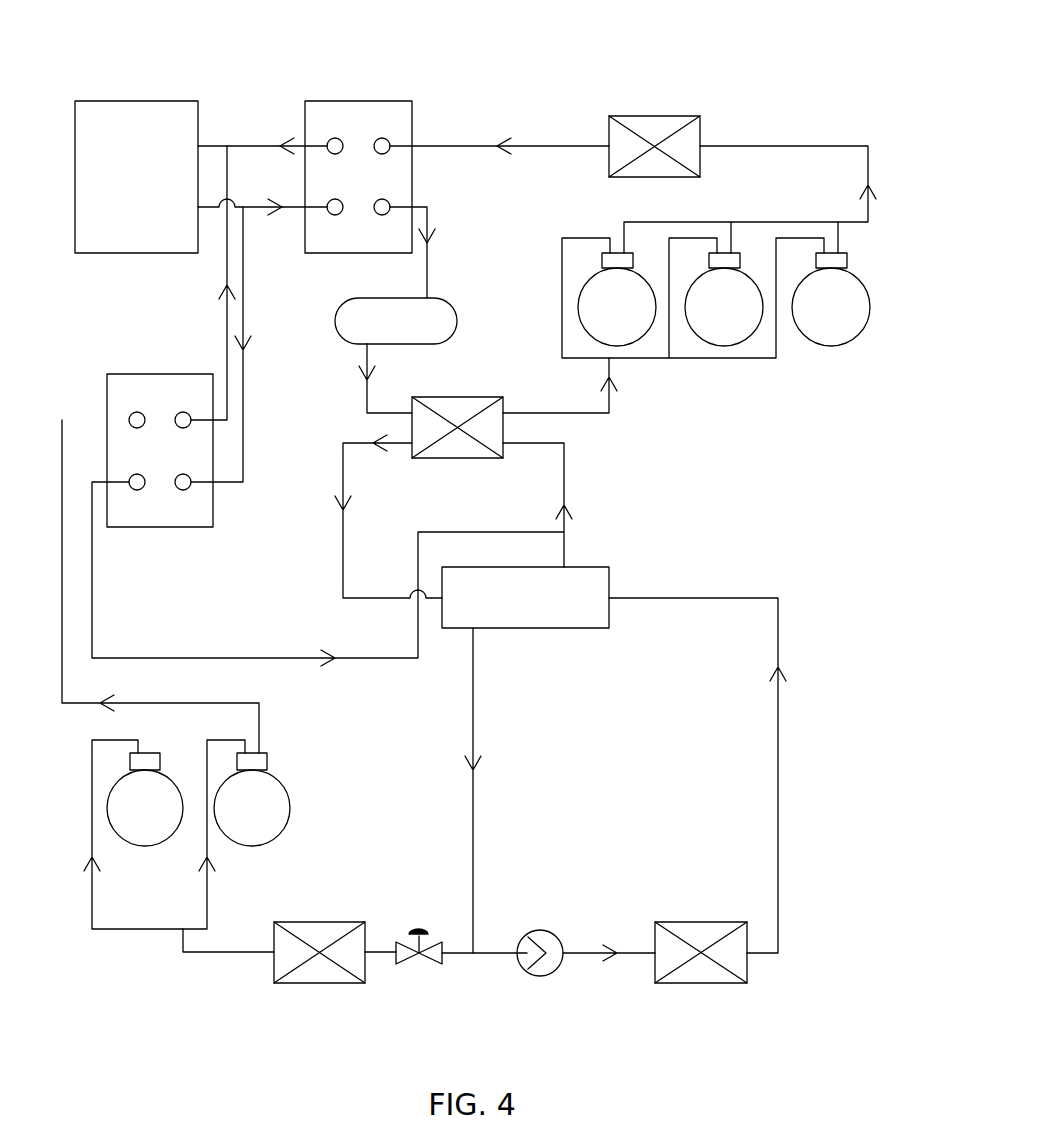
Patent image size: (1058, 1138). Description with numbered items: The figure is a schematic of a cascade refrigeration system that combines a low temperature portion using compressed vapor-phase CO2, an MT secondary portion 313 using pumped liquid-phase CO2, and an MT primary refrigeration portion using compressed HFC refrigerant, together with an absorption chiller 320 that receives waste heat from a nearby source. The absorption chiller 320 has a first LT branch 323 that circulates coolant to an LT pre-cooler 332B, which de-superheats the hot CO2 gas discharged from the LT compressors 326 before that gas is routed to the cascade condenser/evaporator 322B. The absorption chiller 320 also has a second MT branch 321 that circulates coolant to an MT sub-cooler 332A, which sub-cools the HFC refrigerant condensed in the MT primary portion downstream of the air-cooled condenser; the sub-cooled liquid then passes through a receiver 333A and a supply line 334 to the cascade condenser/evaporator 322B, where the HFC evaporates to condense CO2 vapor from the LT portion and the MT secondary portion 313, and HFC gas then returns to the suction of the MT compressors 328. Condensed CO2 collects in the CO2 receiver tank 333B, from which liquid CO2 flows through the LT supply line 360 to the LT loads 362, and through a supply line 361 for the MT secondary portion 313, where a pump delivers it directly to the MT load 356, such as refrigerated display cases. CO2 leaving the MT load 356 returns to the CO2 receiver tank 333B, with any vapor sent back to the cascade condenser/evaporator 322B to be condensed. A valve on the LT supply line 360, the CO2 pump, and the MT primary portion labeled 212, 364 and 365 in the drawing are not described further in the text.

The absorption chiller 320 is at (127, 101).
The second MT branch 321 is at (255, 207).
The MT sub-cooler 332A is at (412, 110).
The first LT branch 323 is at (243, 451).
The LT pre-cooler 332B is at (213, 514).
The receiver 333A is at (457, 317).
The supply line 334 is at (367, 367).
The cascade condenser/evaporator 322B is at (503, 435).
The MT compressors 328 is at (850, 273).
The medium temperature refrigeration system 212 is at (806, 417).
The CO2 receiver tank 333B is at (609, 580).
The MT secondary portion 313 is at (756, 565).
The LT supply line 360 is at (473, 710).
The LT compressors 326 is at (283, 782).
The LT loads 362 is at (274, 977).
The expansion valve 364 is at (405, 945).
The supply line 361 is at (507, 950).
The CO2 pump 365 is at (542, 929).
The MT load 356 is at (710, 922).